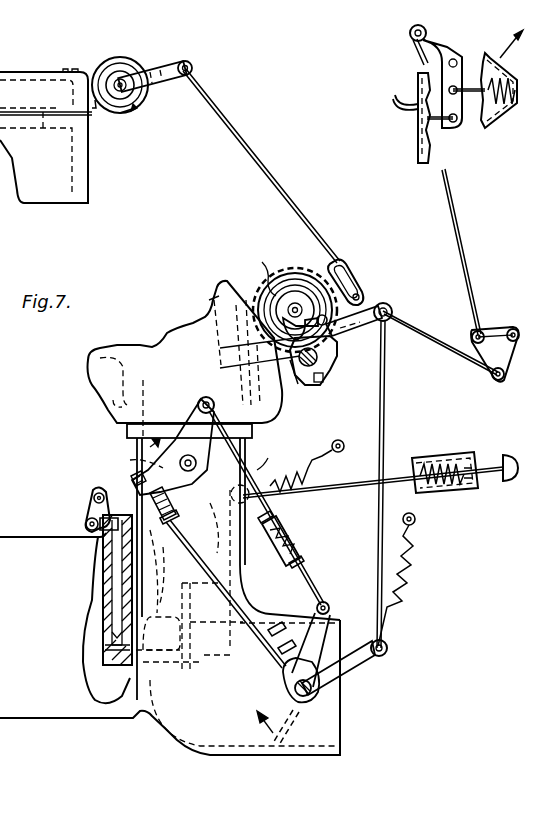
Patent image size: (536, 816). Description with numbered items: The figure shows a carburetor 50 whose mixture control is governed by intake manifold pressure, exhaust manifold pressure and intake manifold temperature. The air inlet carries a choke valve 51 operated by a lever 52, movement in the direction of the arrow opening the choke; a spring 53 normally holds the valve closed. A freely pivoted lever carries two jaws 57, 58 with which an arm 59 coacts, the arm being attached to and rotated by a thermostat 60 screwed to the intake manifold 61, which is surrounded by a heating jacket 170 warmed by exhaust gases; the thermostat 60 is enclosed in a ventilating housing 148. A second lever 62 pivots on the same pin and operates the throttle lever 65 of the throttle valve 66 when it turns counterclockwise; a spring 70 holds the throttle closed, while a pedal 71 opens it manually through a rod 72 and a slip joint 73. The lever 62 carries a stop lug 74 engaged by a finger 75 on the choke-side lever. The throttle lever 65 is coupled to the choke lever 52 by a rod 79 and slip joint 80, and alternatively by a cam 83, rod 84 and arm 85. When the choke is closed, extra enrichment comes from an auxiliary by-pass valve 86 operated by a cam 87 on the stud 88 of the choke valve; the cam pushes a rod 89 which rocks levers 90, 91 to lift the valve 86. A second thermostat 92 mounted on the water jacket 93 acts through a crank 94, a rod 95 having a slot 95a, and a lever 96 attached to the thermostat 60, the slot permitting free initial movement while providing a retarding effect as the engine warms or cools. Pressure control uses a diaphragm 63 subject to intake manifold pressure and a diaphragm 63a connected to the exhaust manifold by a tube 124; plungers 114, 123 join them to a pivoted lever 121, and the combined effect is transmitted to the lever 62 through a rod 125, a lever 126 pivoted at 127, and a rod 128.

The carburetor 50 is at (170, 629).
The choke valve 51 is at (292, 723).
The lever 52 is at (366, 662).
The spring 53 is at (412, 560).
The jaw 57 is at (220, 368).
The jaw 58 is at (340, 346).
The arm 59 is at (220, 348).
The thermostat 60 is at (292, 272).
The intake manifold 61 is at (140, 352).
The lever 62 is at (391, 298).
The diaphragm 63 is at (480, 58).
The diaphragm 63a is at (418, 143).
The throttle lever 65 is at (198, 410).
The throttle valve 66 is at (130, 458).
The spring 70 is at (312, 464).
The pedal 71 is at (505, 456).
The rod 72 is at (326, 487).
The slip joint 73 is at (420, 460).
The stop lug 74 is at (326, 386).
The finger 75 is at (300, 385).
The rod 79 is at (257, 470).
The slip joint 80 is at (290, 538).
The cam 83 is at (284, 686).
The rod 84 is at (248, 600).
The arm 85 is at (146, 482).
The auxiliary by-pass valve 86 is at (104, 596).
The cam 87 is at (276, 678).
The stud 88 is at (316, 690).
The rod 89 is at (112, 496).
The lever 90 is at (88, 510).
The lever 91 is at (104, 528).
The thermostat 92 is at (118, 56).
The water jacket 93 is at (33, 64).
The crank 94 is at (160, 62).
The rod 95 is at (218, 119).
The slot 95a is at (343, 270).
The lever 96 is at (322, 280).
The plunger 114 is at (476, 110).
The lever 121 is at (432, 40).
The plunger 123 is at (440, 128).
The tube 124 is at (392, 97).
The rod 125 is at (452, 214).
The lever 126 is at (493, 325).
The pivot 127 is at (486, 345).
The rod 128 is at (406, 348).
The housing 148 is at (251, 269).
The heating jacket 170 is at (209, 300).